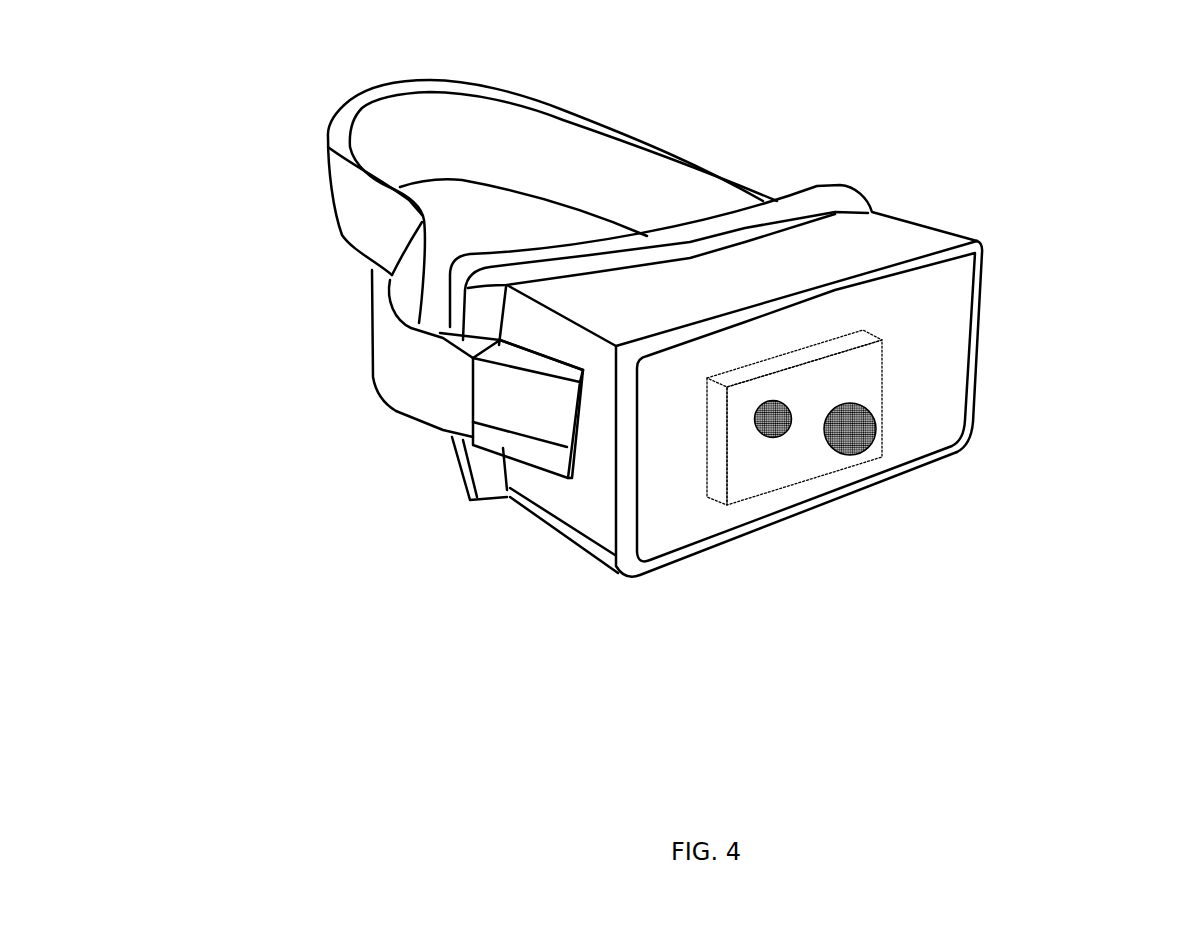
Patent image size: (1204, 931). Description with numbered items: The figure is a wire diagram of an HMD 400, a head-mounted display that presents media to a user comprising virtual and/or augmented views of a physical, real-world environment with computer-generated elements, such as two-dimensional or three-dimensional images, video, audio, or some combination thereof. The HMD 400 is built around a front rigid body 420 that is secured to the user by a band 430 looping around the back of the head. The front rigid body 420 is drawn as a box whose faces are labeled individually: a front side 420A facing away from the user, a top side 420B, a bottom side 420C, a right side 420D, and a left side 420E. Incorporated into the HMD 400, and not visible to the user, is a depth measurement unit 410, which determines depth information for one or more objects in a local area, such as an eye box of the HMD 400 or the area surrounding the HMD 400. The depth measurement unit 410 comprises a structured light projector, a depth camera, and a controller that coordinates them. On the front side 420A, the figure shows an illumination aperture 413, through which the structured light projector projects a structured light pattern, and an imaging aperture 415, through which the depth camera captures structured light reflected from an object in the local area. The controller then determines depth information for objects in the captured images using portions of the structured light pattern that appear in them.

The HMD 400 is at (210, 110).
The depth measurement unit 410 is at (948, 499).
The illumination aperture 413 is at (787, 443).
The imaging aperture 415 is at (882, 433).
The front rigid body 420 is at (711, 384).
The front side 420A is at (669, 538).
The top side 420B is at (572, 291).
The bottom side 420C is at (538, 554).
The right side 420D is at (583, 515).
The left side 420E is at (957, 219).
The band 430 is at (667, 138).